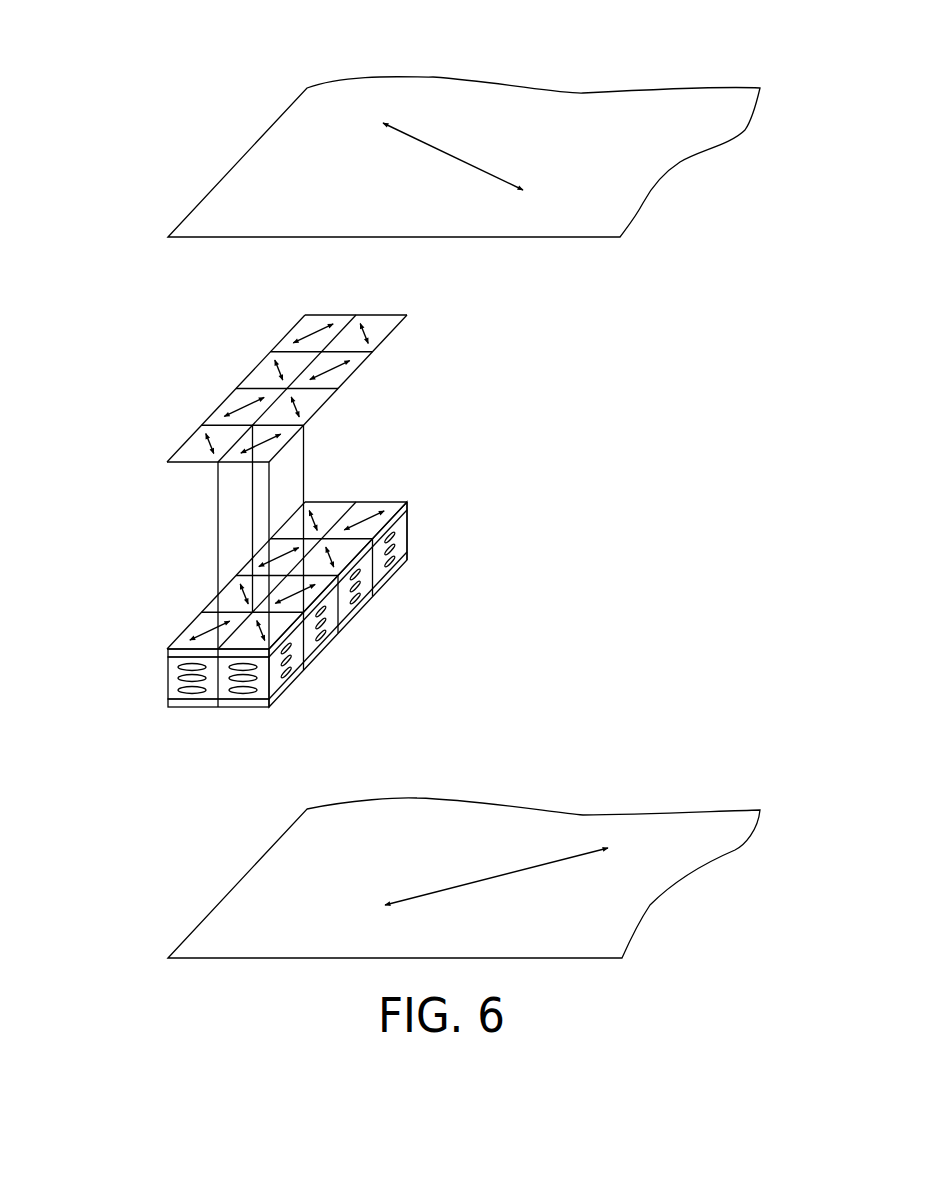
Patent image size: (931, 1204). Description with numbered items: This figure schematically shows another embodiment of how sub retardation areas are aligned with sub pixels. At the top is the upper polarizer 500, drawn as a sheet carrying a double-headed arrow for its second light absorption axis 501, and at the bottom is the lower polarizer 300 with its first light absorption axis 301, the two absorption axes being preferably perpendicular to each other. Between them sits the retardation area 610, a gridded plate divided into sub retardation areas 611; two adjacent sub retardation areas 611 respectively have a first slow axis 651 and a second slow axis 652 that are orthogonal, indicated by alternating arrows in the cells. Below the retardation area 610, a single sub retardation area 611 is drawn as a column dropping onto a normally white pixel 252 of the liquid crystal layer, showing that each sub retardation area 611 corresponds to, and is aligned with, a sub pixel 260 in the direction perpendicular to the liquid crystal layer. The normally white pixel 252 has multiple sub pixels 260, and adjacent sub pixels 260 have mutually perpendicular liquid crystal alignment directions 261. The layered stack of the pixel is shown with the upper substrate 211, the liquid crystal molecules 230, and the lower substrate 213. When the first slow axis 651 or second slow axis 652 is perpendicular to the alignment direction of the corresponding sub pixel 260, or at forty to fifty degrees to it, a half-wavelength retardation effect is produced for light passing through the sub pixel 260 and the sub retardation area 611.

The upper polarizer 500 is at (680, 64).
The second light absorption axis 501 is at (450, 153).
The retardation area 610 is at (401, 298).
The second slow axis 652 is at (303, 318).
The first slow axis 651 is at (372, 333).
The sub retardation area 611 is at (304, 440).
The normally white pixel 252 is at (400, 482).
The liquid crystal alignment direction 261 is at (398, 526).
The sub pixel 260 is at (310, 622).
The upper substrate 211 is at (168, 652).
The liquid crystal molecules 230 is at (170, 674).
The lower substrate 213 is at (170, 700).
The lower polarizer 300 is at (680, 795).
The first light absorption axis 301 is at (483, 877).